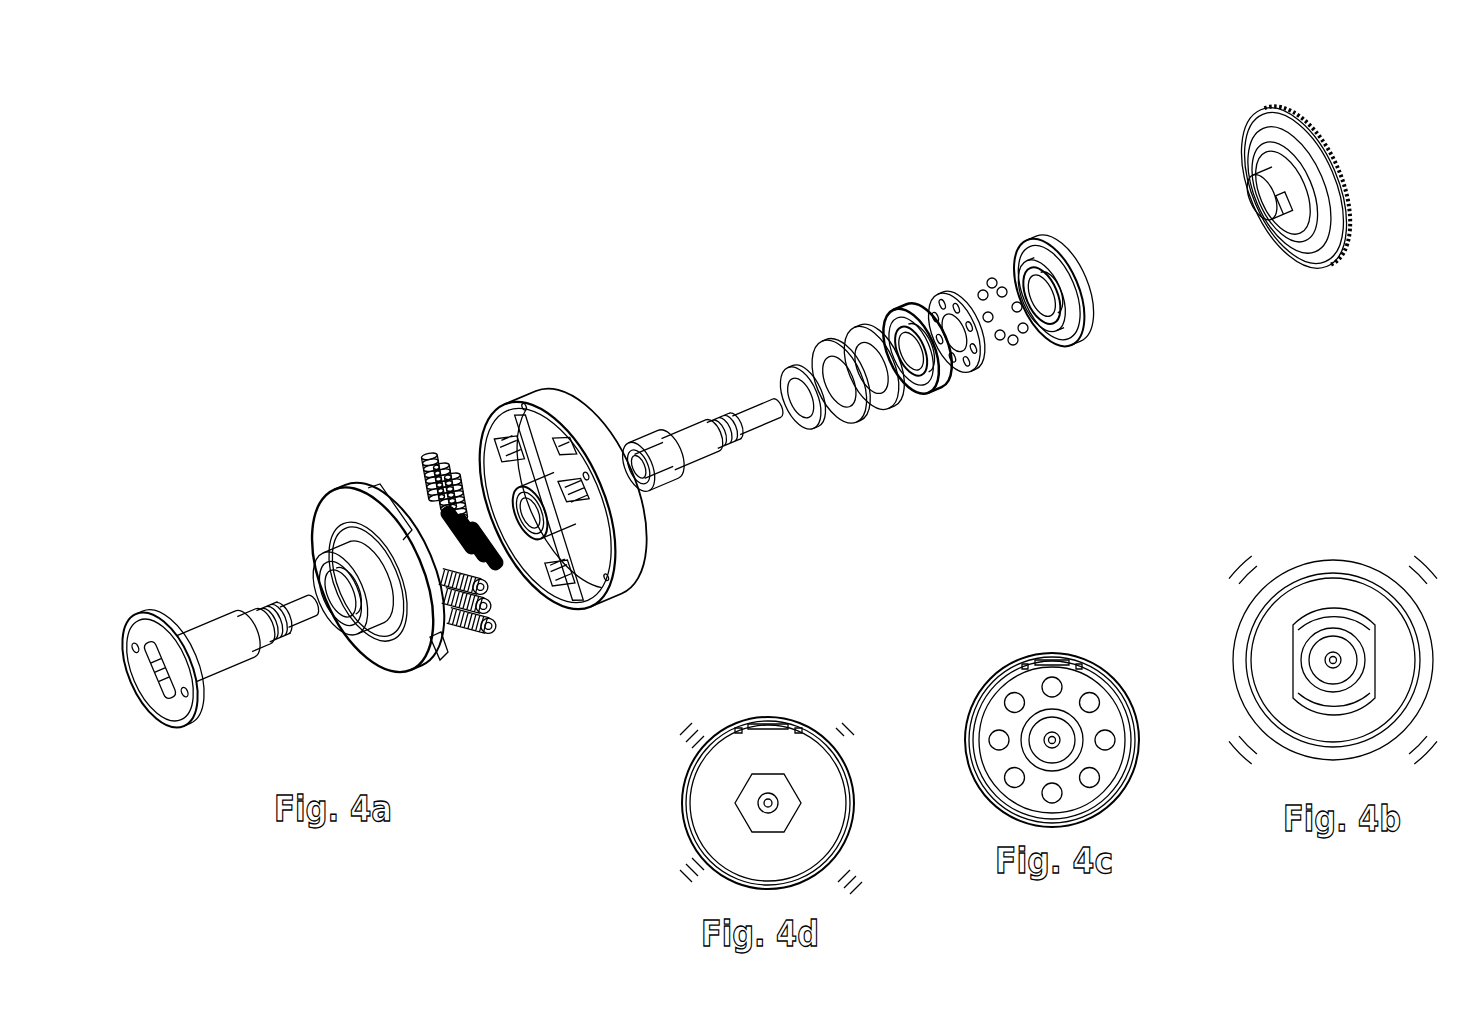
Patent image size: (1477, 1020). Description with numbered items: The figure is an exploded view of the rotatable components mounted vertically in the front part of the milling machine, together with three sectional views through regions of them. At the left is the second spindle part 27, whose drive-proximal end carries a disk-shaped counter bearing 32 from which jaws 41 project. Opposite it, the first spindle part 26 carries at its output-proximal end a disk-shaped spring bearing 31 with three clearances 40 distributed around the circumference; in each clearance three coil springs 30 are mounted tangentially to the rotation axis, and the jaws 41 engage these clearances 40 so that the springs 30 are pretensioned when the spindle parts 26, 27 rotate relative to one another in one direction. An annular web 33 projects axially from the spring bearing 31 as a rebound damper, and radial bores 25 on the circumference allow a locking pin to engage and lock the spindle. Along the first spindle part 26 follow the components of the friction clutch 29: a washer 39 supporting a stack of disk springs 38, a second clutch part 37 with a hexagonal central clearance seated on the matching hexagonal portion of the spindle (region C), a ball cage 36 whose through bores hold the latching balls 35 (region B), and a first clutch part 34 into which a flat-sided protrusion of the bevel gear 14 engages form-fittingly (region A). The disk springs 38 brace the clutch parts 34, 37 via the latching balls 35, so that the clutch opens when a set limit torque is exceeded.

The bevel gear 14 is at (1258, 114).
The region A is at (1280, 232).
The radial bores 25 is at (605, 578).
The first spindle part 26 is at (697, 422).
The second spindle part 27 is at (140, 620).
The friction clutch 29 is at (705, 212).
The springs 30 is at (425, 457).
The spring bearing 31 is at (490, 416).
The counter bearing 32 is at (340, 487).
The annular web 33 is at (562, 404).
The first clutch part 34 is at (1025, 237).
The latching balls 35 is at (985, 280).
The ball cage 36 is at (930, 300).
The second clutch part 37 is at (880, 322).
The disk springs 38 is at (845, 350).
The washer 39 is at (787, 370).
The clearances 40 is at (562, 620).
The jaws 41 is at (445, 658).
The region B is at (958, 370).
The region C is at (746, 448).